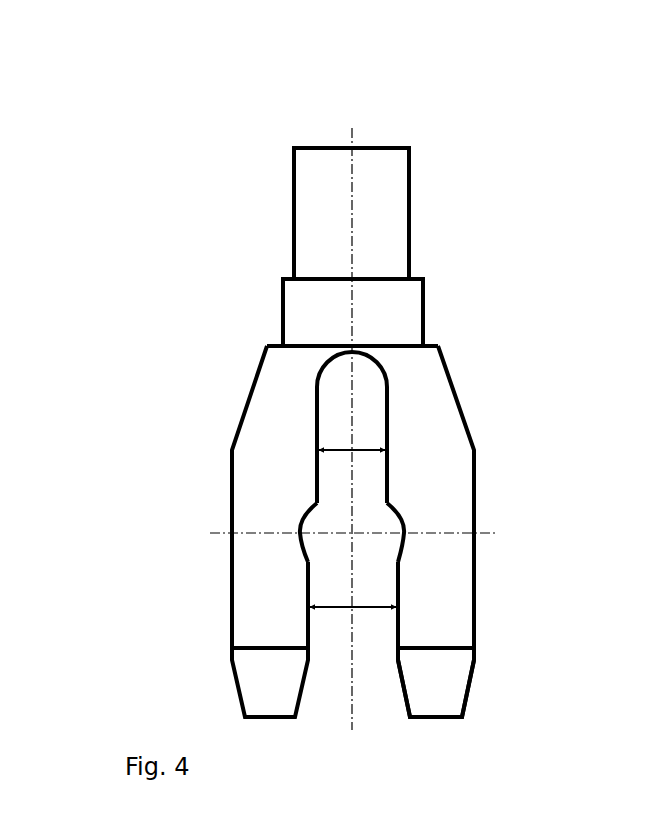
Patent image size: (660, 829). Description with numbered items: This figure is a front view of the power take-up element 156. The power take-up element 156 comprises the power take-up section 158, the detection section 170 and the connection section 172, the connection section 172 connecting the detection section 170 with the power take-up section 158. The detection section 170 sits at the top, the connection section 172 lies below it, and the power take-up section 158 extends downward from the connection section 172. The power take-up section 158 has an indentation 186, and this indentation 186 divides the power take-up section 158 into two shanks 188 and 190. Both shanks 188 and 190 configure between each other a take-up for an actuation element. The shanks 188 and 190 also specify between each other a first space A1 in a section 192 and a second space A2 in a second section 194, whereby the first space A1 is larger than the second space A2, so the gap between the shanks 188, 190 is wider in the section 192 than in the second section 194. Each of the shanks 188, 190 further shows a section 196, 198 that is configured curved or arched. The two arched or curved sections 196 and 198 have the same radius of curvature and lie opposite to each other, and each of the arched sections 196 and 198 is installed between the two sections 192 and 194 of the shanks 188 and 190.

The power take-up element 156 is at (441, 189).
The power take-up section 158 is at (341, 556).
The detection section 170 is at (388, 186).
The connection section 172 is at (407, 315).
The indentation 186 is at (402, 685).
The shank 188 is at (250, 468).
The shank 190 is at (452, 477).
The section 192 is at (400, 630).
The second section 194 is at (390, 392).
The arched section 196 is at (300, 552).
The arched section 198 is at (398, 553).